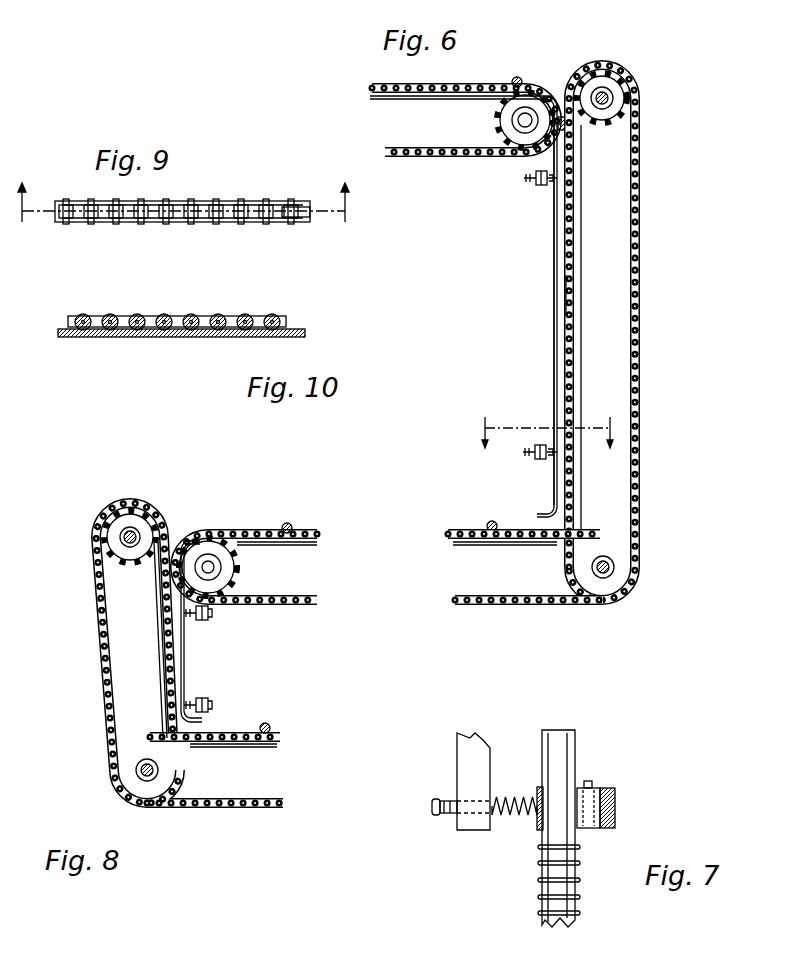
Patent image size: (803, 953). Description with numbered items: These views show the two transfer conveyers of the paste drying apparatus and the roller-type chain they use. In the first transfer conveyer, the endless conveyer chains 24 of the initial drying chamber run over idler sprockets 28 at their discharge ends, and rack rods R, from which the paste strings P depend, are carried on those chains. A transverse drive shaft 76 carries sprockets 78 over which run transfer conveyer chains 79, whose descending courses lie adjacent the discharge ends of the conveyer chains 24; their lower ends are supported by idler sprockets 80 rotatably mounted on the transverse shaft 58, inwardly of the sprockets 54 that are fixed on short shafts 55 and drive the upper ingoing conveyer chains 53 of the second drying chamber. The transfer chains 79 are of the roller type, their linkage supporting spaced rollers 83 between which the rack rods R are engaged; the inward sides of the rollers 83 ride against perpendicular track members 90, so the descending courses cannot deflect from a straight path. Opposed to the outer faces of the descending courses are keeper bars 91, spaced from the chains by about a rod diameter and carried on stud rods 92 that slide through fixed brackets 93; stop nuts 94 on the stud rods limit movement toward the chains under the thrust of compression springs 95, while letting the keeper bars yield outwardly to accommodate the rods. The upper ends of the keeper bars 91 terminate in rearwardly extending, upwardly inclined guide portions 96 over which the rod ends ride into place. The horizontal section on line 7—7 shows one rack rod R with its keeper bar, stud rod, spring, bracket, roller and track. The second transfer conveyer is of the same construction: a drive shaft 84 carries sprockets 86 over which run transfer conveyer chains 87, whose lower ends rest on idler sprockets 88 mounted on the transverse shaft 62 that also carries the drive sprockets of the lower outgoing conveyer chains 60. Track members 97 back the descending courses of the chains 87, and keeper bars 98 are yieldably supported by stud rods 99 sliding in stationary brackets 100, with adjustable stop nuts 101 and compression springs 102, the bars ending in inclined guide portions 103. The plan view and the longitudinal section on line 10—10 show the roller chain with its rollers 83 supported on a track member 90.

In FIG. 6, the section line 7— 7 is at (548, 444).
In FIG. 8, the section line 10— 10 is at (212, 707).
In FIG. 9, the section line 10— 10 is at (183, 189).
In FIG. 6, the conveyer chains 24 is at (479, 90).
In FIG. 6, the idler sprockets 28 is at (498, 128).
In FIG. 6, the conveyer chains 53 is at (468, 532).
In FIG. 8, the conveyer chains 53 is at (262, 530).
In FIG. 8, the sprockets 54 is at (231, 553).
In FIG. 8, the short shafts 55 is at (216, 568).
In FIG. 6, the transverse shaft 58 is at (616, 570).
In FIG. 8, the conveyer chains 60 is at (250, 736).
In FIG. 8, the transverse shaft 62 is at (147, 782).
In FIG. 6, the drive shaft 76 is at (612, 99).
In FIG. 6, the sprockets 78 is at (600, 127).
In FIG. 6, the transfer conveyer chains 79 is at (641, 218).
In FIG. 7, the transfer conveyer chains 79 is at (592, 783).
In FIG. 6, the idler sprockets 80 is at (612, 548).
In FIG. 6, the rollers 83 is at (566, 314).
In FIG. 7, the rollers 83 is at (616, 810).
In FIG. 8, the rollers 83 is at (176, 673).
In FIG. 9, the rollers 83 is at (225, 225).
In FIG. 10, the rollers 83 is at (215, 314).
In FIG. 8, the drive shaft 84 is at (134, 532).
In FIG. 8, the sprockets 86 is at (132, 563).
In FIG. 8, the transfer conveyer chains 87 is at (99, 634).
In FIG. 8, the idler sprockets 88 is at (120, 778).
In FIG. 6, the track members 90 is at (582, 254).
In FIG. 7, the track members 90 is at (616, 796).
In FIG. 9, the track members 90 is at (296, 224).
In FIG. 10, the track members 90 is at (196, 338).
In FIG. 6, the keeper bars 91 is at (554, 247).
In FIG. 7, the keeper bars 91 is at (538, 829).
In FIG. 6, the stud rods 92 is at (549, 186).
In FIG. 7, the stud rods 92 is at (509, 797).
In FIG. 6, the brackets 93 is at (551, 188).
In FIG. 7, the brackets 93 is at (457, 763).
In FIG. 6, the stop nuts 94 is at (536, 188).
In FIG. 7, the stop nuts 94 is at (441, 818).
In FIG. 6, the compression springs 95 is at (550, 180).
In FIG. 7, the compression springs 95 is at (505, 822).
In FIG. 6, the guide portions 96 is at (562, 116).
In FIG. 8, the track members 97 is at (158, 660).
In FIG. 8, the keeper bars 98 is at (185, 673).
In FIG. 8, the stud rods 99 is at (211, 613).
In FIG. 8, the brackets 100 is at (190, 603).
In FIG. 8, the stop nuts 101 is at (213, 621).
In FIG. 8, the compression springs 102 is at (190, 615).
In FIG. 8, the guide portions 103 is at (186, 543).
In FIG. 6, the rack rods R is at (519, 76).
In FIG. 7, the rack rods R is at (577, 747).
In FIG. 8, the rack rods R is at (179, 538).
In FIG. 7, the paste strings P is at (581, 880).